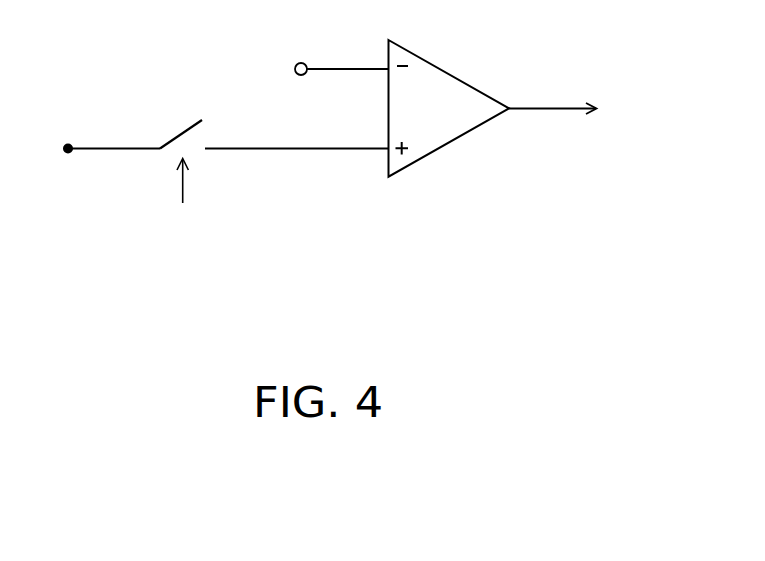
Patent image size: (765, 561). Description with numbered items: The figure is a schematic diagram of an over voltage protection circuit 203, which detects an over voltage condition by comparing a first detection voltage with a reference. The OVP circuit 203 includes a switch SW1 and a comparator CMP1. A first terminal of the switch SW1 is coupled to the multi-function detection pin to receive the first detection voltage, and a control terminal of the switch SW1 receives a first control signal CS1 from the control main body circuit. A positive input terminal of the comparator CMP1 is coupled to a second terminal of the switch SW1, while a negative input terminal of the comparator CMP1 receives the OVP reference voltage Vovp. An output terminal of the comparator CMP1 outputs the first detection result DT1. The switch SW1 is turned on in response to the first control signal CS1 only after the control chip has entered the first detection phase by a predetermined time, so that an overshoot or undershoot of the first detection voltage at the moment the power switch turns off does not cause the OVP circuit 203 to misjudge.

The over voltage protection circuit 203 is at (345, 157).
The switch SW1 is at (270, 117).
The first control signal CS1 is at (181, 199).
The OVP reference voltage Vovp is at (331, 52).
The comparator CMP1 is at (449, 108).
The first detection result DT1 is at (573, 110).